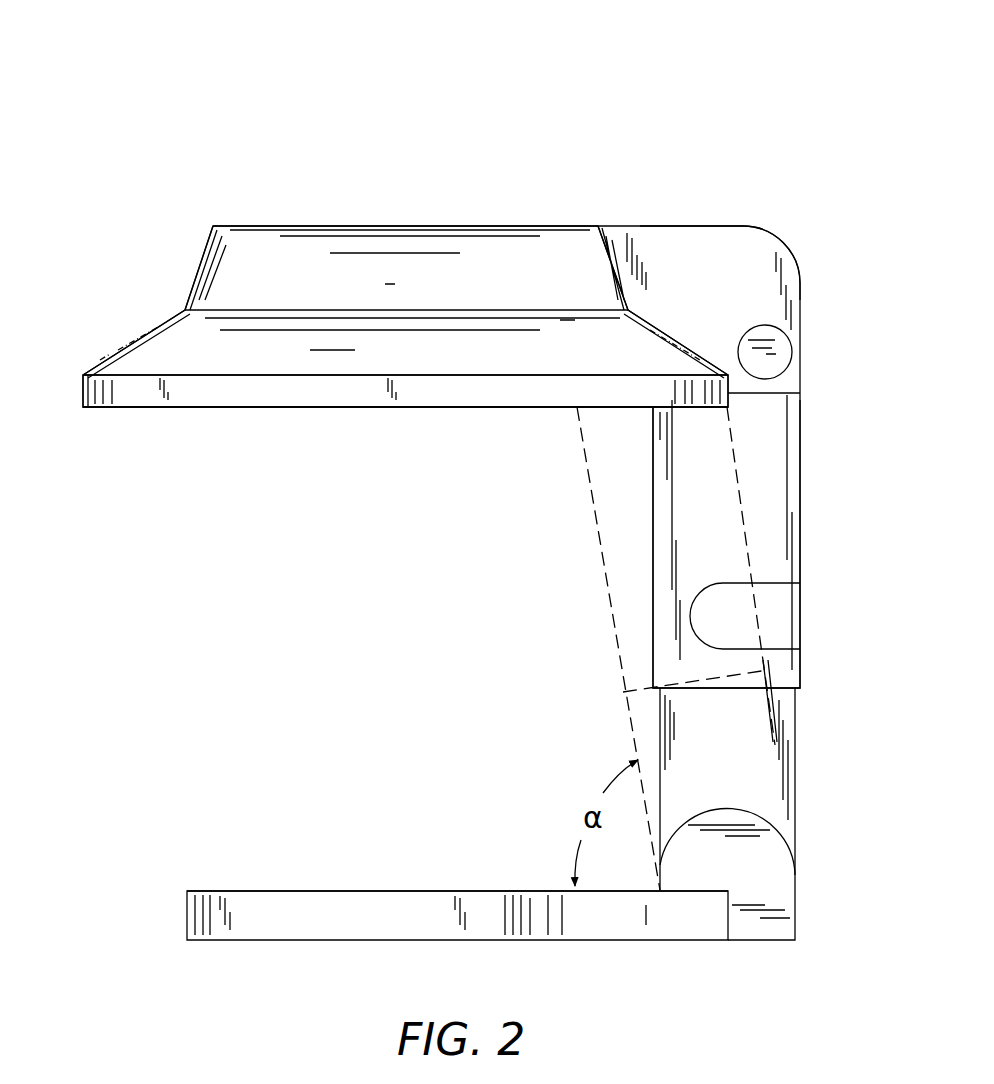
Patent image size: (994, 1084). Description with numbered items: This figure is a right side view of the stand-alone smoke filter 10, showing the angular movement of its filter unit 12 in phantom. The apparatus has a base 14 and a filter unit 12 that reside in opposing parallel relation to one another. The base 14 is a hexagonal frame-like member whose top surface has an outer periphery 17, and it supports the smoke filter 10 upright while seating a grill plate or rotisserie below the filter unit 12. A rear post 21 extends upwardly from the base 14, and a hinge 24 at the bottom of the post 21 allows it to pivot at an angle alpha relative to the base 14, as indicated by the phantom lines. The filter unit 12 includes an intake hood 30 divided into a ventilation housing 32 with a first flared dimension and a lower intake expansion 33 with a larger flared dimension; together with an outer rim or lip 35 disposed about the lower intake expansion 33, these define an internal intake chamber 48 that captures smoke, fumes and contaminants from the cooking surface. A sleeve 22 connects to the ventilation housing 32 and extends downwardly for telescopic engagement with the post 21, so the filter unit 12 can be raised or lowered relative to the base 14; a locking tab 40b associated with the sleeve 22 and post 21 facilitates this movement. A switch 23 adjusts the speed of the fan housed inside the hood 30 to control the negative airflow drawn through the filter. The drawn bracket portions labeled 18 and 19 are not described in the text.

The smoke filter 10 is at (124, 82).
The filter unit 12 is at (234, 218).
The base 14 is at (245, 885).
The outer periphery 17 is at (315, 930).
The support bracket 18 is at (787, 234).
The upper bracket portion 19 is at (710, 238).
The rear post 21 is at (783, 730).
The sleeve 22 is at (770, 478).
The switch 23 is at (777, 354).
The hinge 24 is at (775, 888).
The intake hood 30 is at (532, 232).
The ventilation housing 32 is at (200, 257).
The lower intake expansion 33 is at (108, 355).
The outer rim or lip 35 is at (202, 395).
The locking tab 40b is at (783, 622).
The internal intake chamber 48 is at (448, 420).